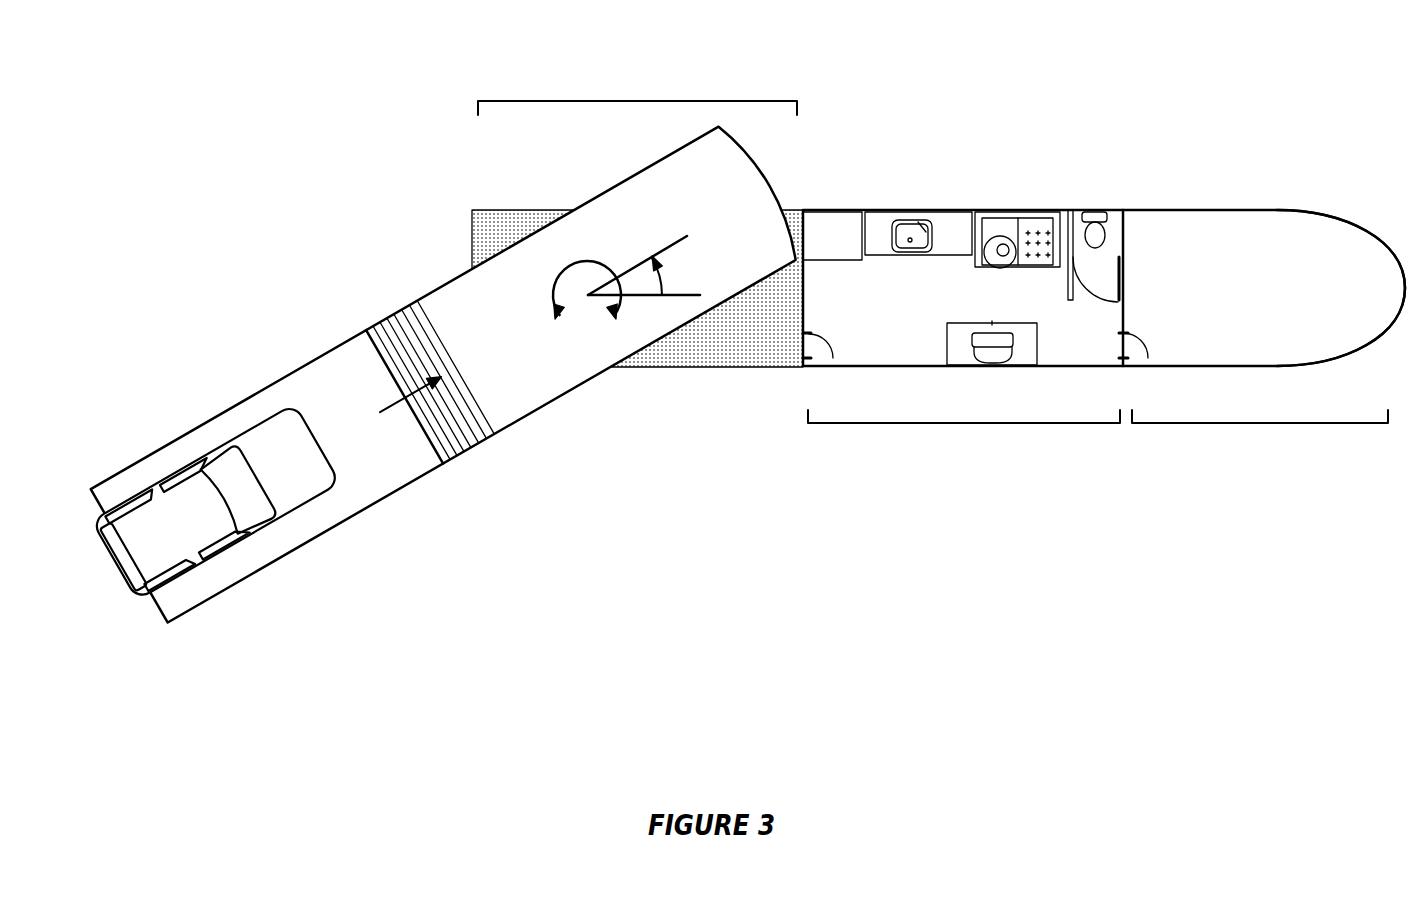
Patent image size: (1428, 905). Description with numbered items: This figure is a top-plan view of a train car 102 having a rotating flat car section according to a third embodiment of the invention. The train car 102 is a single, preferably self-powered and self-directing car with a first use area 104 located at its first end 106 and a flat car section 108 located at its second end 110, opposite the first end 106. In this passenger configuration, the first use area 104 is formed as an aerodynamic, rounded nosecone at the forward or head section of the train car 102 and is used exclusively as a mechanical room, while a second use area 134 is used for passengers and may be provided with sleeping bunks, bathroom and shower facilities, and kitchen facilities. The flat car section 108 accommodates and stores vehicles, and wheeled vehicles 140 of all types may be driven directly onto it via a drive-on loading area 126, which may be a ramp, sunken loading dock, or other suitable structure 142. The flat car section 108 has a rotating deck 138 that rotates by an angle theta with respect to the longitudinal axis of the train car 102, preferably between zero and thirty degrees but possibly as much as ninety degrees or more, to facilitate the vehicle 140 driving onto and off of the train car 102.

The train car 102 is at (1109, 302).
The first use area 104 is at (1269, 346).
The first end 106 is at (1405, 285).
The flat car section 108 is at (615, 100).
The second end 110 is at (473, 218).
The drive-on loading area 126 is at (408, 333).
The second use area 134 is at (975, 424).
The rotating deck 138 is at (497, 437).
The wheeled vehicle 140 is at (213, 582).
The suitable structure 142 is at (360, 515).